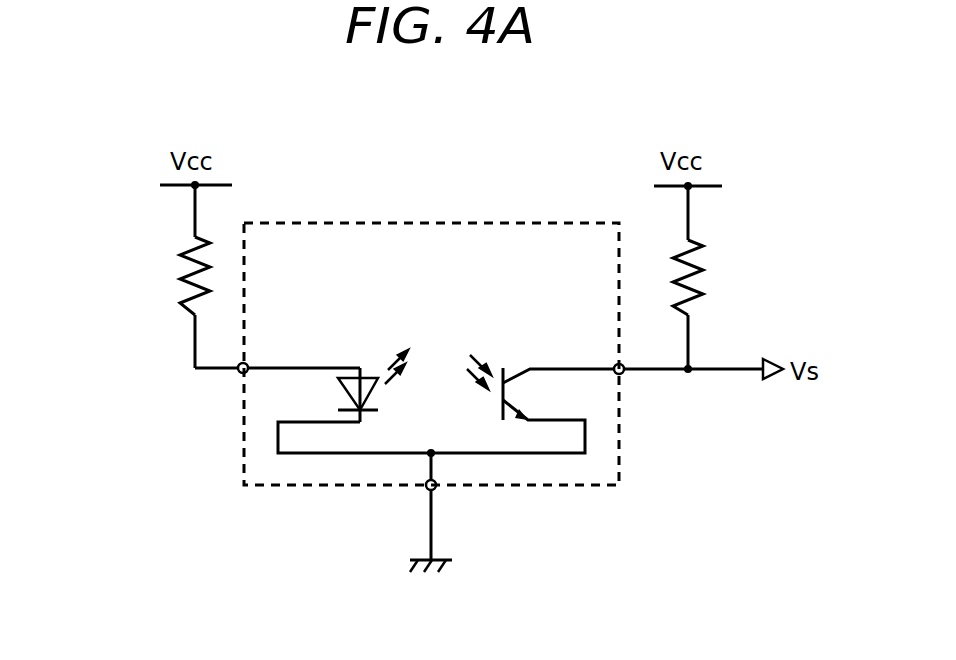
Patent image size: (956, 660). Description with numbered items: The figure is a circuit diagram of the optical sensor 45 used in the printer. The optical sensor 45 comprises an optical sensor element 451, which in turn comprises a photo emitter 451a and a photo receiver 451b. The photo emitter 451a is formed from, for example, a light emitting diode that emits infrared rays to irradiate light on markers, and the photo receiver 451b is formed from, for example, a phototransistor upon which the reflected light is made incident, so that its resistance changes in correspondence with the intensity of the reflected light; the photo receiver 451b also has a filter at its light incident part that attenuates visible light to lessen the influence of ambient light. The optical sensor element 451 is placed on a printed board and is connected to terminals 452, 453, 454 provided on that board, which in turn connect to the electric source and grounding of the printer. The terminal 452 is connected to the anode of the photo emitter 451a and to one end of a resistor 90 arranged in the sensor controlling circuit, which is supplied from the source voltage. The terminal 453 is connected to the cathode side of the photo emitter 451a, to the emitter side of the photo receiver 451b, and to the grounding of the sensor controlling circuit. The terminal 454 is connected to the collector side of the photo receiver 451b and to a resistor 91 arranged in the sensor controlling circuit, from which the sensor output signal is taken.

The optical sensor 45 is at (373, 222).
The resistor 90 is at (186, 264).
The resistor 91 is at (713, 268).
The optical sensor element 451 is at (422, 359).
The photo emitter 451a is at (300, 400).
The photo receiver 451b is at (523, 400).
The terminal 452 is at (239, 360).
The terminal 453 is at (427, 492).
The terminal 454 is at (622, 362).